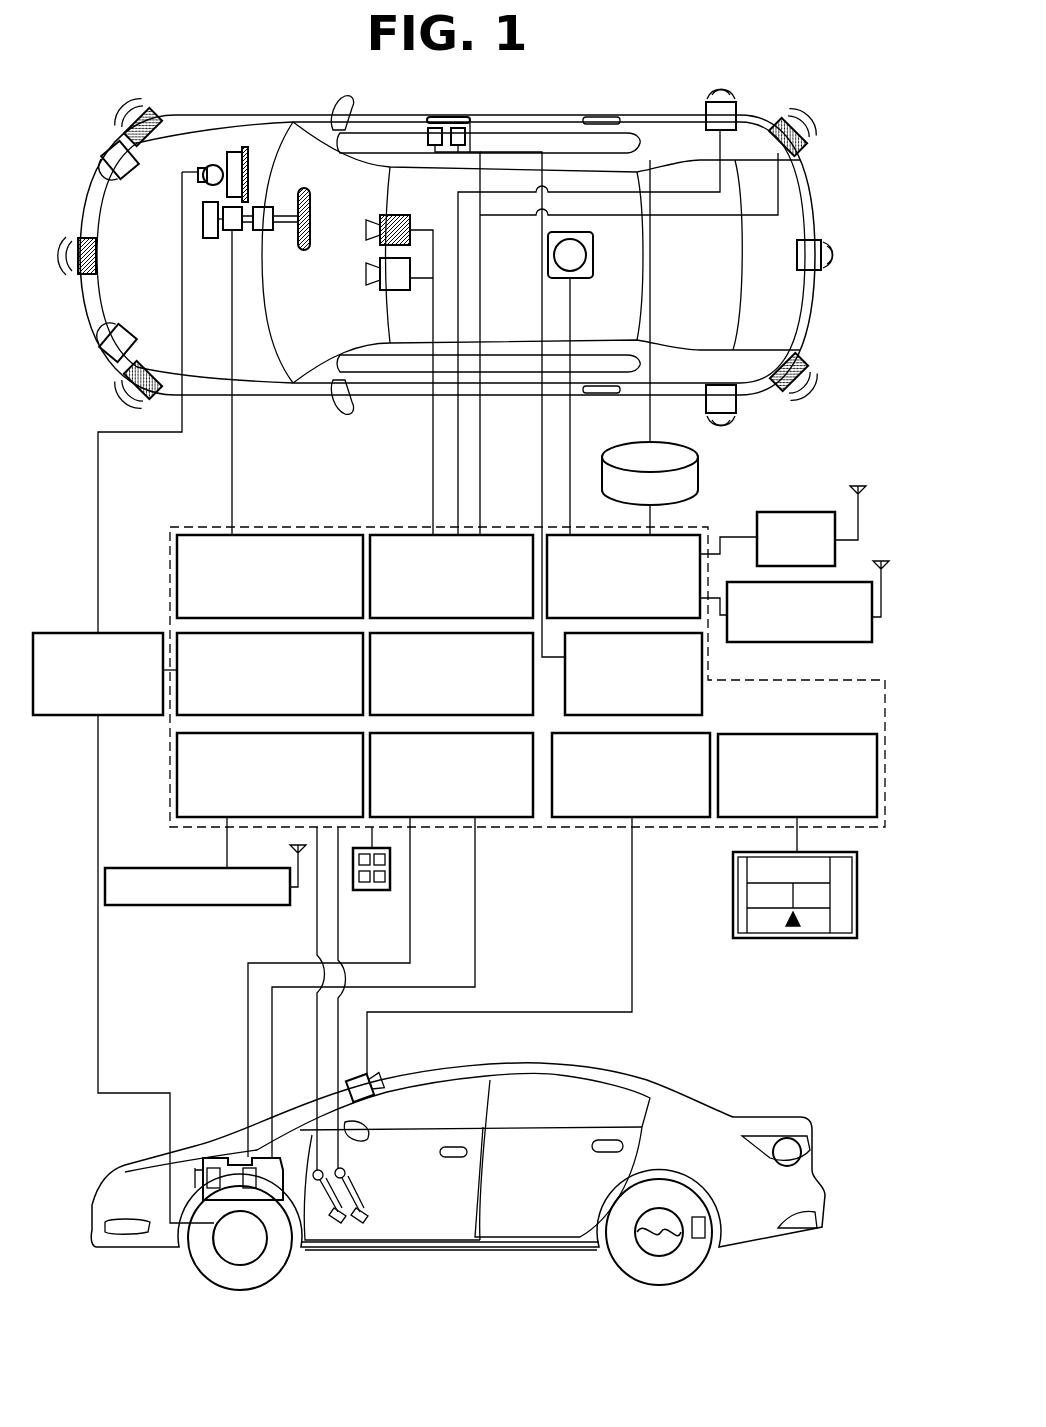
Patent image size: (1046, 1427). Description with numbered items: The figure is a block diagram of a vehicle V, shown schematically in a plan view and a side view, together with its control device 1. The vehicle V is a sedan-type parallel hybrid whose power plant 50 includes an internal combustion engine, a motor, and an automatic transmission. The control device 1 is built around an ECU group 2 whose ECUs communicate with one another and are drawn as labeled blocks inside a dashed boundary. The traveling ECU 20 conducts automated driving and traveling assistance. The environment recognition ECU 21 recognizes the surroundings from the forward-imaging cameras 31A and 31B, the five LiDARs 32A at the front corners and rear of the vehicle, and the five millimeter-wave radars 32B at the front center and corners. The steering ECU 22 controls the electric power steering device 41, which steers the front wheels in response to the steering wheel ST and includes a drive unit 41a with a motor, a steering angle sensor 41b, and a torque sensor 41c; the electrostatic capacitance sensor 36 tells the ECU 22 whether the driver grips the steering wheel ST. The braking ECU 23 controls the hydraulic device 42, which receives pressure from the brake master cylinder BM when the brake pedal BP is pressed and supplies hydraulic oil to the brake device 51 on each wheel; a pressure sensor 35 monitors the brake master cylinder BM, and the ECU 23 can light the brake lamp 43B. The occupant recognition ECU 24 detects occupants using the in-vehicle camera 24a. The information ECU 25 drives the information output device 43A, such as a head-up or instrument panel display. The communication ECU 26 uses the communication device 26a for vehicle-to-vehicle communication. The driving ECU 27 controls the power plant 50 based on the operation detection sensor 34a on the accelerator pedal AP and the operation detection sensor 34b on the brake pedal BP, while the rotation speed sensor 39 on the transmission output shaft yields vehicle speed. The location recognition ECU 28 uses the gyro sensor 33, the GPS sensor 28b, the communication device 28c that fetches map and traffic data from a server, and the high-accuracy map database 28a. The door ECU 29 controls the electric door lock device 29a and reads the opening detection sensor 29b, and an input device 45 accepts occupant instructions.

The control device 1 is at (815, 485).
The ECU group 2 is at (352, 527).
The traveling ECU 20 is at (535, 703).
The environment recognition ECU 21 is at (390, 535).
The steering ECU 22 is at (270, 535).
The braking ECU 23 is at (207, 718).
The occupant recognition ECU 24 is at (600, 818).
The occupant detection unit 24a is at (372, 1080).
The information ECU 25 is at (822, 734).
The communication ECU 26 is at (177, 773).
The communication device 26a is at (195, 905).
The driving ECU 27 is at (457, 827).
The location recognition ECU 28 is at (697, 521).
The database 28a is at (641, 445).
The GPS sensor 28b is at (777, 512).
The communication device 28c is at (815, 642).
The door ECU 29 is at (704, 700).
The electric door lock device 29a is at (466, 117).
The opening detection sensor 29b is at (435, 127).
The camera 31A is at (392, 292).
The camera 31B is at (410, 221).
The LiDAR 32A is at (708, 128).
The radar 32B is at (150, 112).
The gyro sensor 33 is at (593, 256).
The operation detection sensor 34a is at (313, 1160).
The operation detection sensor 34b is at (347, 1175).
The pressure sensor 35 is at (242, 148).
The electrostatic capacitance sensor 36 is at (312, 215).
The rotation speed sensor 39 is at (243, 1160).
The electric power steering device 41 is at (247, 262).
The drive unit 41a is at (250, 232).
The steering angle sensor 41b is at (212, 238).
The torque sensor 41c is at (247, 170).
The hydraulic device 42 is at (57, 633).
The information output device 43A is at (827, 938).
The brake lamp 43B is at (790, 1138).
The input device 45 is at (373, 890).
The power plant 50 is at (283, 1258).
The brake device 51 is at (212, 1243).
The accelerator pedal AP is at (340, 1225).
The brake pedal BP is at (366, 1225).
The brake master cylinder BM is at (213, 163).
The steering wheel ST is at (308, 190).
The vehicle V is at (833, 160).